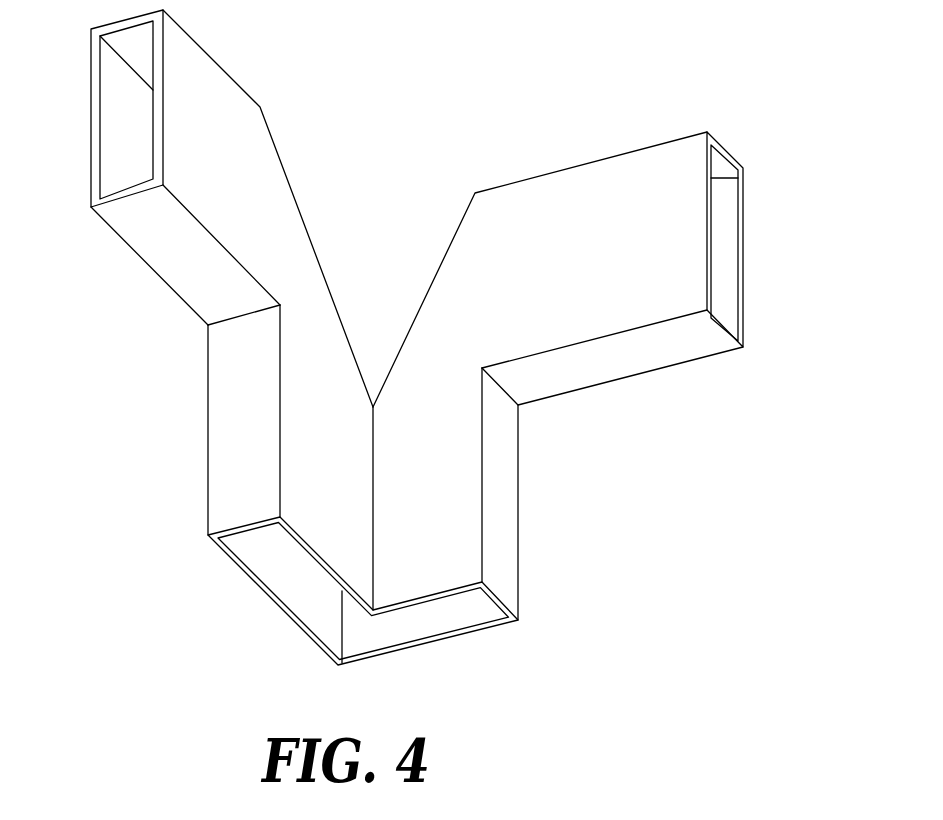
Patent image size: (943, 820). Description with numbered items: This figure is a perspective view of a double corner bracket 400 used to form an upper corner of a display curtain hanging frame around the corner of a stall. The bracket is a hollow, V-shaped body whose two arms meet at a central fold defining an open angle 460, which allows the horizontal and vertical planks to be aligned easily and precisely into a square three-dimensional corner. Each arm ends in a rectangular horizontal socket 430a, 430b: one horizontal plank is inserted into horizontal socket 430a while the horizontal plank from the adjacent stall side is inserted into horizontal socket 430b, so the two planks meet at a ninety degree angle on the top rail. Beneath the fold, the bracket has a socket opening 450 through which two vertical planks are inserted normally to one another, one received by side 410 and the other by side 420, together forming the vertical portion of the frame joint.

The double corner bracket 400 is at (592, 65).
The side 410 is at (207, 450).
The side 420 is at (522, 497).
The horizontal socket 430a is at (730, 243).
The horizontal socket 430b is at (106, 115).
The socket opening 450 is at (415, 630).
The open angle 460 is at (378, 242).